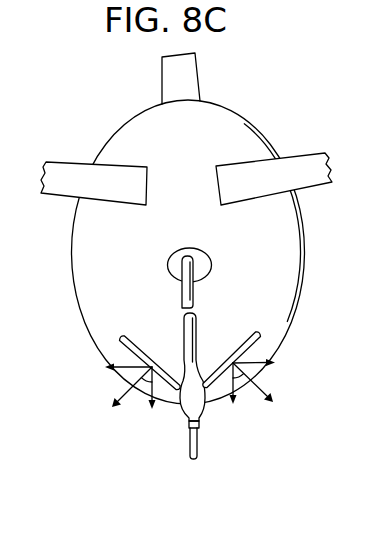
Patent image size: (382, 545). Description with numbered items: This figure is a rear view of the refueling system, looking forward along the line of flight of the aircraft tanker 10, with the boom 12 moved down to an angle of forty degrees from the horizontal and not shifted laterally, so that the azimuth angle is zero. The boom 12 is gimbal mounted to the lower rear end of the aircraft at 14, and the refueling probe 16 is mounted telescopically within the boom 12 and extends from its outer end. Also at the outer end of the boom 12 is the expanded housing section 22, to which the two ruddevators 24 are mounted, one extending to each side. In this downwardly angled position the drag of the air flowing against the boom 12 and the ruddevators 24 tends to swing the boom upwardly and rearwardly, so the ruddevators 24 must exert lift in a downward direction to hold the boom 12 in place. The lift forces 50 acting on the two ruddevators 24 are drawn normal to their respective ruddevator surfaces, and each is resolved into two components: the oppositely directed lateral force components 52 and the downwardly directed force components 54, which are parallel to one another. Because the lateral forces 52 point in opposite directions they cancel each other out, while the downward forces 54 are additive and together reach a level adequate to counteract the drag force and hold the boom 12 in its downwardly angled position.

The aircraft tanker 10 is at (250, 96).
The boom 12 is at (215, 351).
The gimbal mount 14 is at (209, 263).
The refueling probe 16 is at (198, 447).
The expanded housing section 22 is at (198, 399).
The ruddevators 24 is at (141, 349).
The lift forces 50 is at (125, 389).
The lateral force components 52 is at (128, 364).
The downwardly directed force components 54 is at (148, 386).